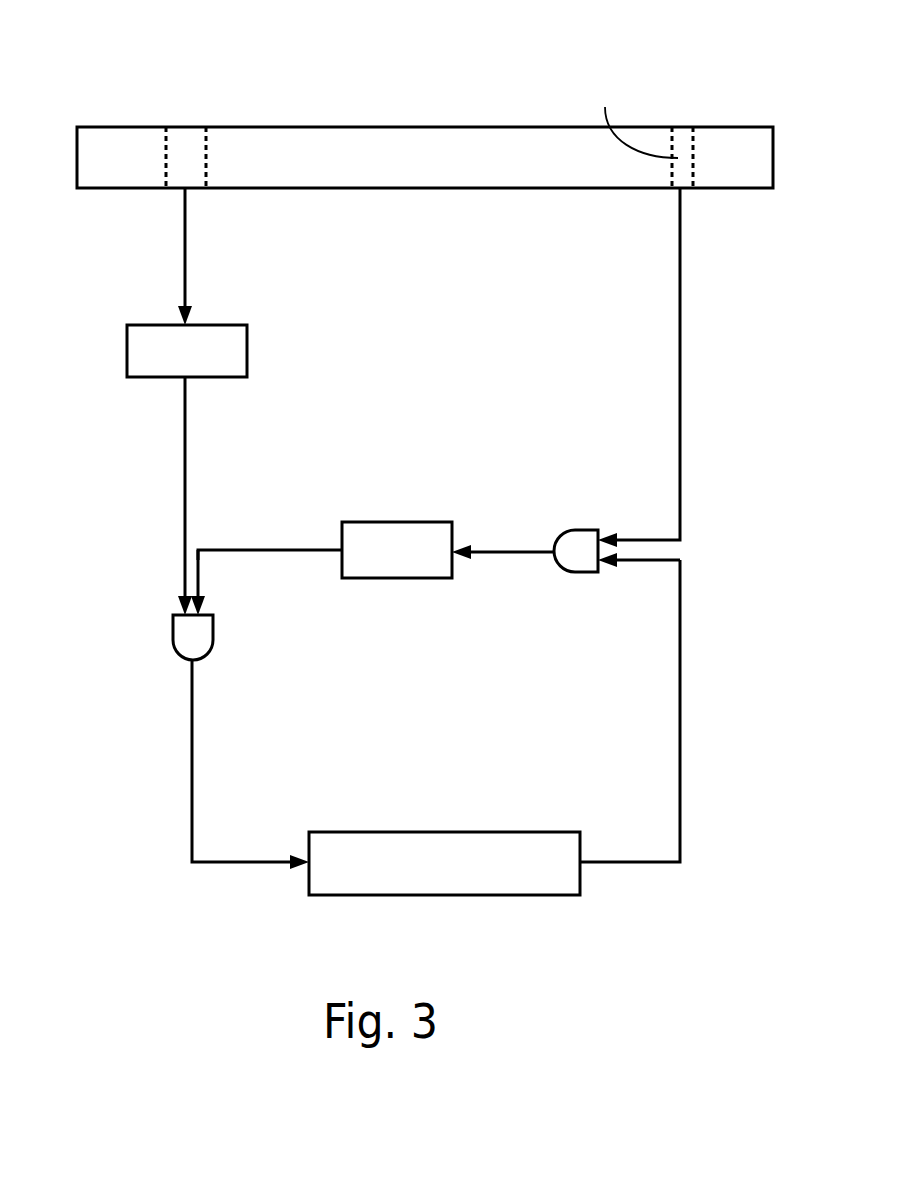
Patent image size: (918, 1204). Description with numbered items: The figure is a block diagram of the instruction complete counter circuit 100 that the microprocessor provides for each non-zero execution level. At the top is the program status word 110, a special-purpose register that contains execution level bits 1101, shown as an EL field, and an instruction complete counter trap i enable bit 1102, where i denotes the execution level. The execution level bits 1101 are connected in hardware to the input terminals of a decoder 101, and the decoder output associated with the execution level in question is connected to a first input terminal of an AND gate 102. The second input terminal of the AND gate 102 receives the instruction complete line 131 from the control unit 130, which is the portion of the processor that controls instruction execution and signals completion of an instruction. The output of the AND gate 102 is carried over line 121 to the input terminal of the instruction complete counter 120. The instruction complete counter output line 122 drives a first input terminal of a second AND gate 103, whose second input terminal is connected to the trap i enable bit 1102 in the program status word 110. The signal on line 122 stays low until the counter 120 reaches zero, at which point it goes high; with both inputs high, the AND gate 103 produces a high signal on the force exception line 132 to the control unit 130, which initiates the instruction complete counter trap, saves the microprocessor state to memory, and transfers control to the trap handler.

The instruction complete counter circuit 100 is at (447, 78).
The program status word 110 is at (147, 127).
The execution level bits 1101 is at (195, 190).
The instruction complete counter trap i enable bit 1102 is at (675, 190).
The decoder 101 is at (150, 325).
The AND gate 102 is at (172, 630).
The second AND gate 103 is at (585, 530).
The control unit 130 is at (415, 522).
The instruction complete line 131 is at (313, 550).
The force exception line 132 is at (500, 552).
The output line of AND gate 102 121 is at (190, 742).
The instruction complete counter output line 122 is at (680, 800).
The instruction complete counter 120 is at (408, 832).